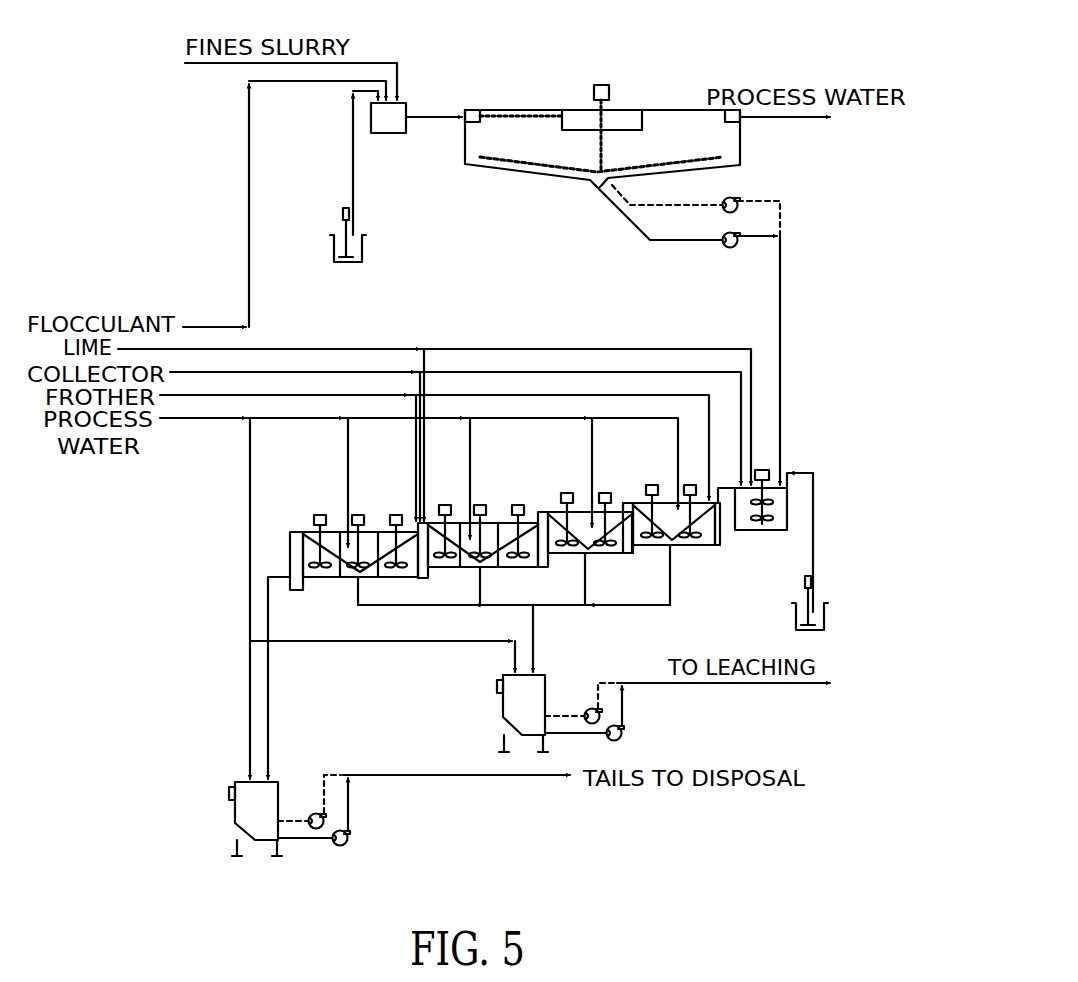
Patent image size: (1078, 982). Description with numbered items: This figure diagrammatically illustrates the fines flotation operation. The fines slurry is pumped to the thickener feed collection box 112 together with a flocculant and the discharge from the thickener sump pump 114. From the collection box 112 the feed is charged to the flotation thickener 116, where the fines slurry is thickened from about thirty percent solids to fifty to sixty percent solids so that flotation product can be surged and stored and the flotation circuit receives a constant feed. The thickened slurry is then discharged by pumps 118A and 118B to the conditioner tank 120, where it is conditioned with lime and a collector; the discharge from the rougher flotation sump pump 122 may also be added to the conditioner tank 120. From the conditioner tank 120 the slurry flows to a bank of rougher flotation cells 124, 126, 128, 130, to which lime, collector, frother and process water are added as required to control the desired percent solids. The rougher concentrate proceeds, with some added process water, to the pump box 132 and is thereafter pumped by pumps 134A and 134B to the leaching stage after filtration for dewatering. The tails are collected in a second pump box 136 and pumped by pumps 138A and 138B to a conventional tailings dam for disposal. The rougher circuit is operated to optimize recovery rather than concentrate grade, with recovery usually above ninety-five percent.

The thickener feed collection box 112 is at (383, 128).
The thickener sump pump 114 is at (363, 252).
The flotation thickener 116 is at (662, 118).
The pump 118A is at (735, 248).
The pump 118B is at (729, 198).
The conditioner tank 120 is at (777, 524).
The rougher flotation sump pump 122 is at (827, 617).
The rougher flotation cell 124 is at (677, 545).
The rougher flotation cell 126 is at (590, 552).
The rougher flotation cell 128 is at (497, 562).
The rougher flotation cell 130 is at (380, 568).
The pump box 132 is at (505, 703).
The pump 134A is at (622, 735).
The pump 134B is at (590, 706).
The pump box 136 is at (247, 810).
The pump 138A is at (350, 845).
The pump 138B is at (313, 812).